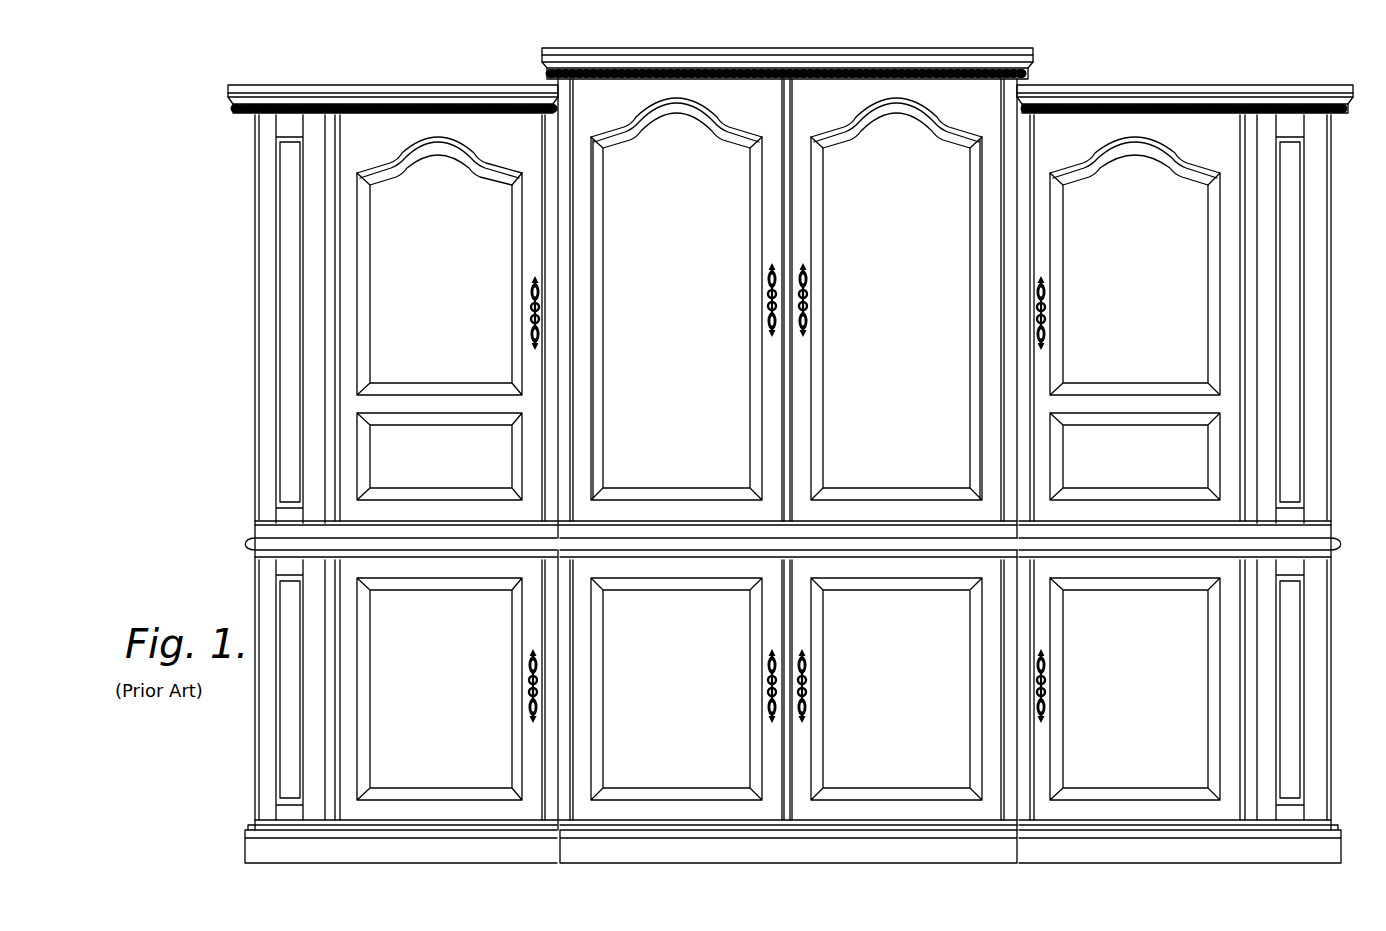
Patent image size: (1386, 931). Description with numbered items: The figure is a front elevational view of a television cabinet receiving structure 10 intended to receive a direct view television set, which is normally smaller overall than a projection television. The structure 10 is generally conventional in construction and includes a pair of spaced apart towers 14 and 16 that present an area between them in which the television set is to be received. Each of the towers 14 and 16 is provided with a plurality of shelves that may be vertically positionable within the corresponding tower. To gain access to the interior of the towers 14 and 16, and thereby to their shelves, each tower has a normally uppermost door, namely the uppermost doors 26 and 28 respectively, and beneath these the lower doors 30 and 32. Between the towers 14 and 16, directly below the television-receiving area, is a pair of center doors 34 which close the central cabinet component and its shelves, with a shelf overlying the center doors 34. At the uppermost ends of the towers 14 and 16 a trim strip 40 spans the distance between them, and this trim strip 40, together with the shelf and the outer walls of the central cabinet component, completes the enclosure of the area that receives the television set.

The television cabinet receiving structure 10 is at (250, 420).
The tower 14 is at (361, 81).
The tower 16 is at (1259, 79).
The trim strip 40 is at (538, 63).
The uppermost door 26 is at (477, 300).
The uppermost door 28 is at (1170, 300).
The lower door 30 is at (477, 703).
The lower door 32 is at (1160, 683).
The center doors 34 is at (712, 693).